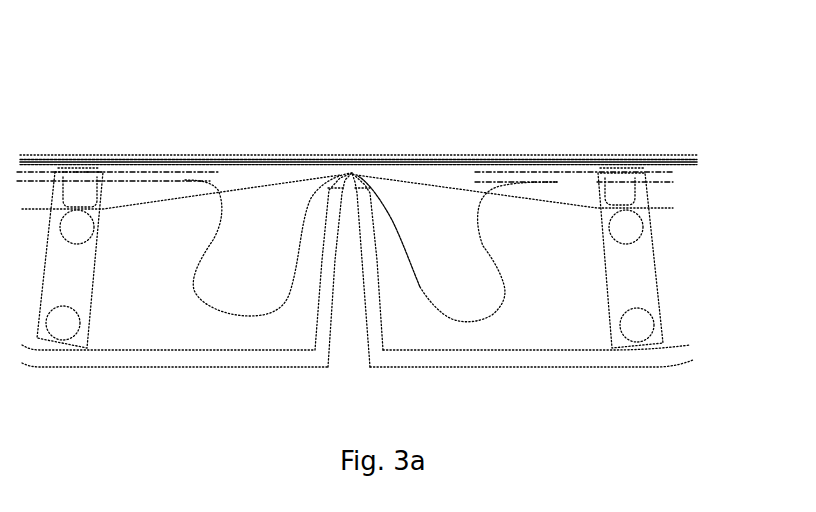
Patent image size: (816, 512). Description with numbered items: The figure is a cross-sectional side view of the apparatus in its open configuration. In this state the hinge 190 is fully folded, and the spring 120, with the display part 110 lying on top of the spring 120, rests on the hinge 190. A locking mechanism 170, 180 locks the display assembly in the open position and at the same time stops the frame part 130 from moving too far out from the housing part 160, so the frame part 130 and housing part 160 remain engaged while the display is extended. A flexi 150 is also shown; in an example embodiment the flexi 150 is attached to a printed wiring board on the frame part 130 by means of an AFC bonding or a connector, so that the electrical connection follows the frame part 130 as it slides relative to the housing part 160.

The display part 110 is at (552, 154).
The spring 120 is at (257, 162).
The frame part 130 is at (447, 174).
The flexi 150 is at (483, 246).
The housing part 160 is at (247, 367).
The locking mechanism 170 is at (618, 168).
The locking mechanism 180 is at (394, 228).
The hinge 190 is at (352, 173).